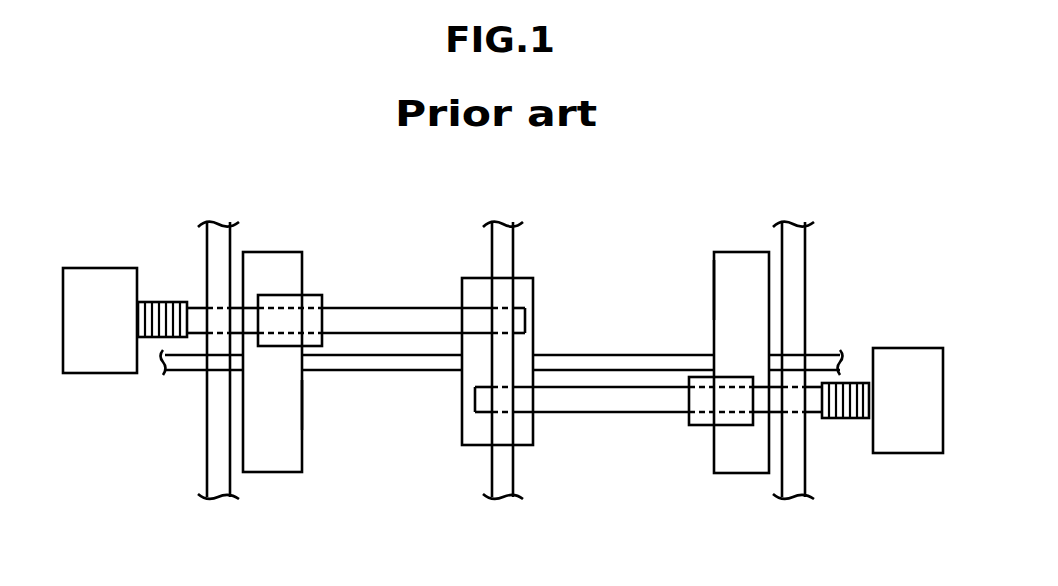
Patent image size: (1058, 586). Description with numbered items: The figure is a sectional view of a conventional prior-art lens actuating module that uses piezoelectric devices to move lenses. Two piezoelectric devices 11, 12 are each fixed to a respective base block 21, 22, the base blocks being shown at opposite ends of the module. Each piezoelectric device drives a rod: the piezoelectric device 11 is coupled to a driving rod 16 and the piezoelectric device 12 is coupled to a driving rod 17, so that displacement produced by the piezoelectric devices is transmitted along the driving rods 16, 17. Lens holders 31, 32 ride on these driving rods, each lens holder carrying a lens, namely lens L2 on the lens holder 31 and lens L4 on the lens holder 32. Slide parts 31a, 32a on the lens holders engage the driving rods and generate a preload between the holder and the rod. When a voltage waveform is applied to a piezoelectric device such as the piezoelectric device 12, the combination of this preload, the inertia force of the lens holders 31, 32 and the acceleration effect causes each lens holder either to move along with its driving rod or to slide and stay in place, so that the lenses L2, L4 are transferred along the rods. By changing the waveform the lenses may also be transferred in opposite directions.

The piezoelectric device 11 is at (158, 300).
The piezoelectric device 12 is at (850, 382).
The driving rod 16 is at (378, 310).
The driving rod 17 is at (603, 413).
The base block 21 is at (100, 374).
The base block 22 is at (905, 454).
The lens holder 31 is at (277, 473).
The slide part 31a is at (309, 296).
The lens holder 32 is at (735, 258).
The slide part 32a is at (699, 426).
The lens L2 is at (305, 398).
The lens L4 is at (708, 292).